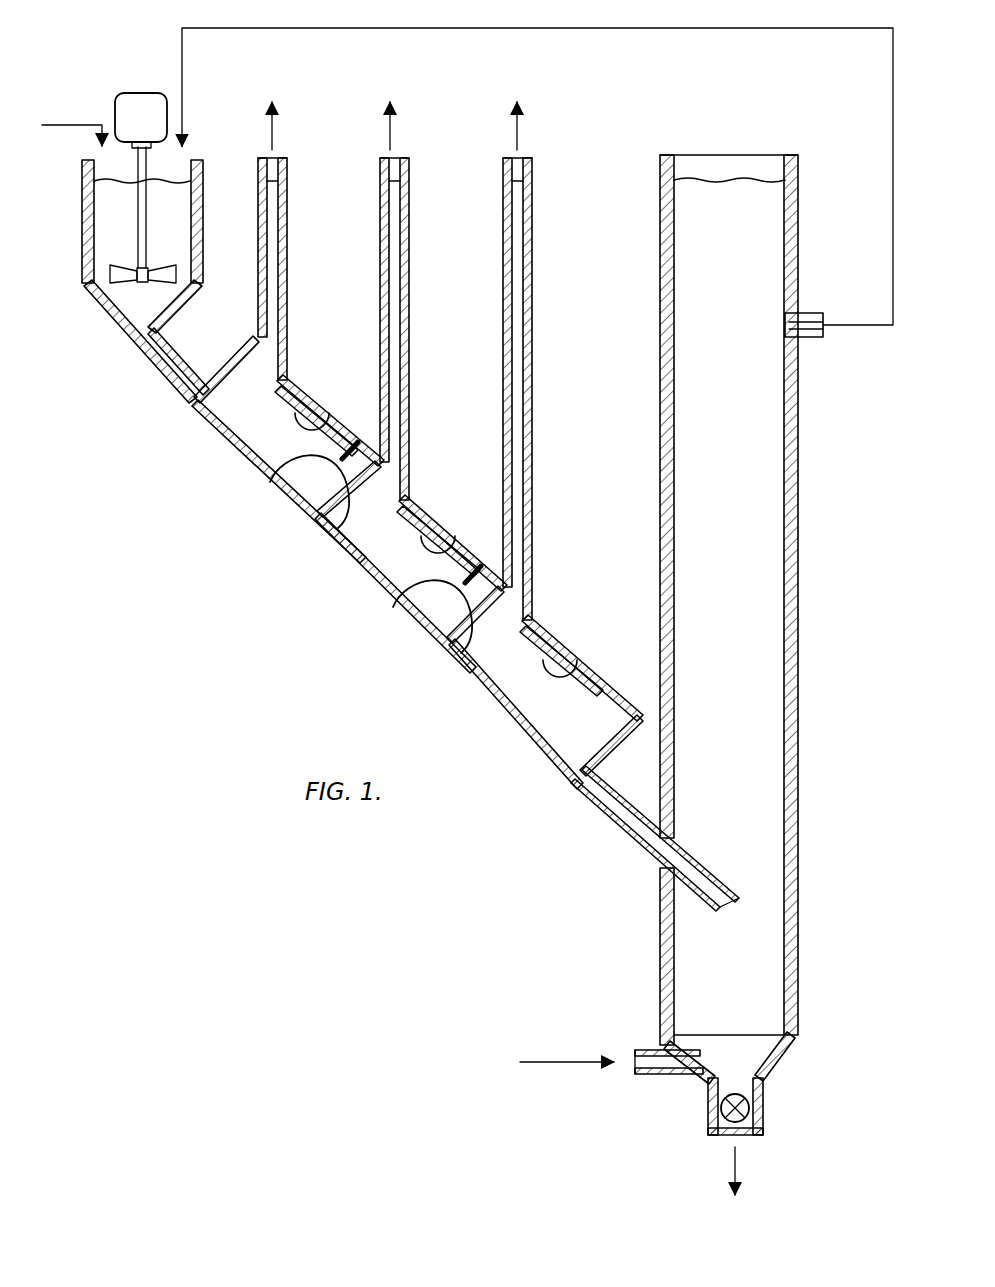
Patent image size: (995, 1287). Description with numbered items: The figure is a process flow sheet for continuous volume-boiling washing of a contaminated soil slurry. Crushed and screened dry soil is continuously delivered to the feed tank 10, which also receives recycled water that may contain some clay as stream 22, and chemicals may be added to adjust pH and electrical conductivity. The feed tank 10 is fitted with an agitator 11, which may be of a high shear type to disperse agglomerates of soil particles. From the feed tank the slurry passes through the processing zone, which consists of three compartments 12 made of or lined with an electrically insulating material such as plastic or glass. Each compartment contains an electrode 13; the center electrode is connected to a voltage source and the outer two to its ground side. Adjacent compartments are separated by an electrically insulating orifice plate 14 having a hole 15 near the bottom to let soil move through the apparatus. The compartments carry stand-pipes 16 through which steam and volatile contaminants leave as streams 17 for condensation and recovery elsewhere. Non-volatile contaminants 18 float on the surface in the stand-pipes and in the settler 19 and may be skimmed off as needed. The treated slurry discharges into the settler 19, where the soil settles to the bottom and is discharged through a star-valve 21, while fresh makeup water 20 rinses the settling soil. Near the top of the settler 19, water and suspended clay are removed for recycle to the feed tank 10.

The feed tank 10 is at (78, 315).
The agitator 11 is at (143, 92).
The compartments 12 is at (263, 408).
The electrode 13 is at (333, 412).
The orifice plate 14 is at (270, 482).
The hole 15 is at (333, 543).
The stand-pipes 16 is at (287, 262).
The streams 17 is at (268, 135).
The non-volatile contaminants 18 is at (268, 182).
The settler 19 is at (660, 393).
The fresh makeup water 20 is at (680, 1076).
The star-valve 21 is at (748, 1086).
The recycled water stream 22 is at (873, 323).